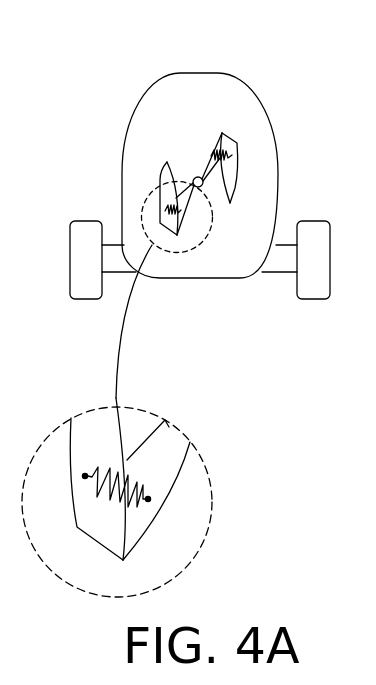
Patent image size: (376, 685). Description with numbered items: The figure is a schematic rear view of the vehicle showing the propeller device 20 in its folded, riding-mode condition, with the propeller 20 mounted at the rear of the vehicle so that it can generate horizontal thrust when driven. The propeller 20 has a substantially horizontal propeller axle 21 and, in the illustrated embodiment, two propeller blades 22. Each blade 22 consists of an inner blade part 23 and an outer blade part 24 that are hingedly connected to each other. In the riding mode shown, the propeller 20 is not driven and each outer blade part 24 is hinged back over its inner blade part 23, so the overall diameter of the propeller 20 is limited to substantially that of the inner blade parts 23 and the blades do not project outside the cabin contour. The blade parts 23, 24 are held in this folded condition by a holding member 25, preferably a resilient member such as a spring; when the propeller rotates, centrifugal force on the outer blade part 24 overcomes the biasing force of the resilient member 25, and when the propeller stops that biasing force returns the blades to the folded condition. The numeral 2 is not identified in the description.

The vehicle body 2 is at (250, 90).
The propeller device 20 is at (158, 178).
The propeller axle 21 is at (194, 178).
The propeller blades 22 is at (233, 135).
The inner blade part 23 is at (213, 143).
The outer blade part 24 is at (239, 177).
The holding member 25 is at (134, 503).